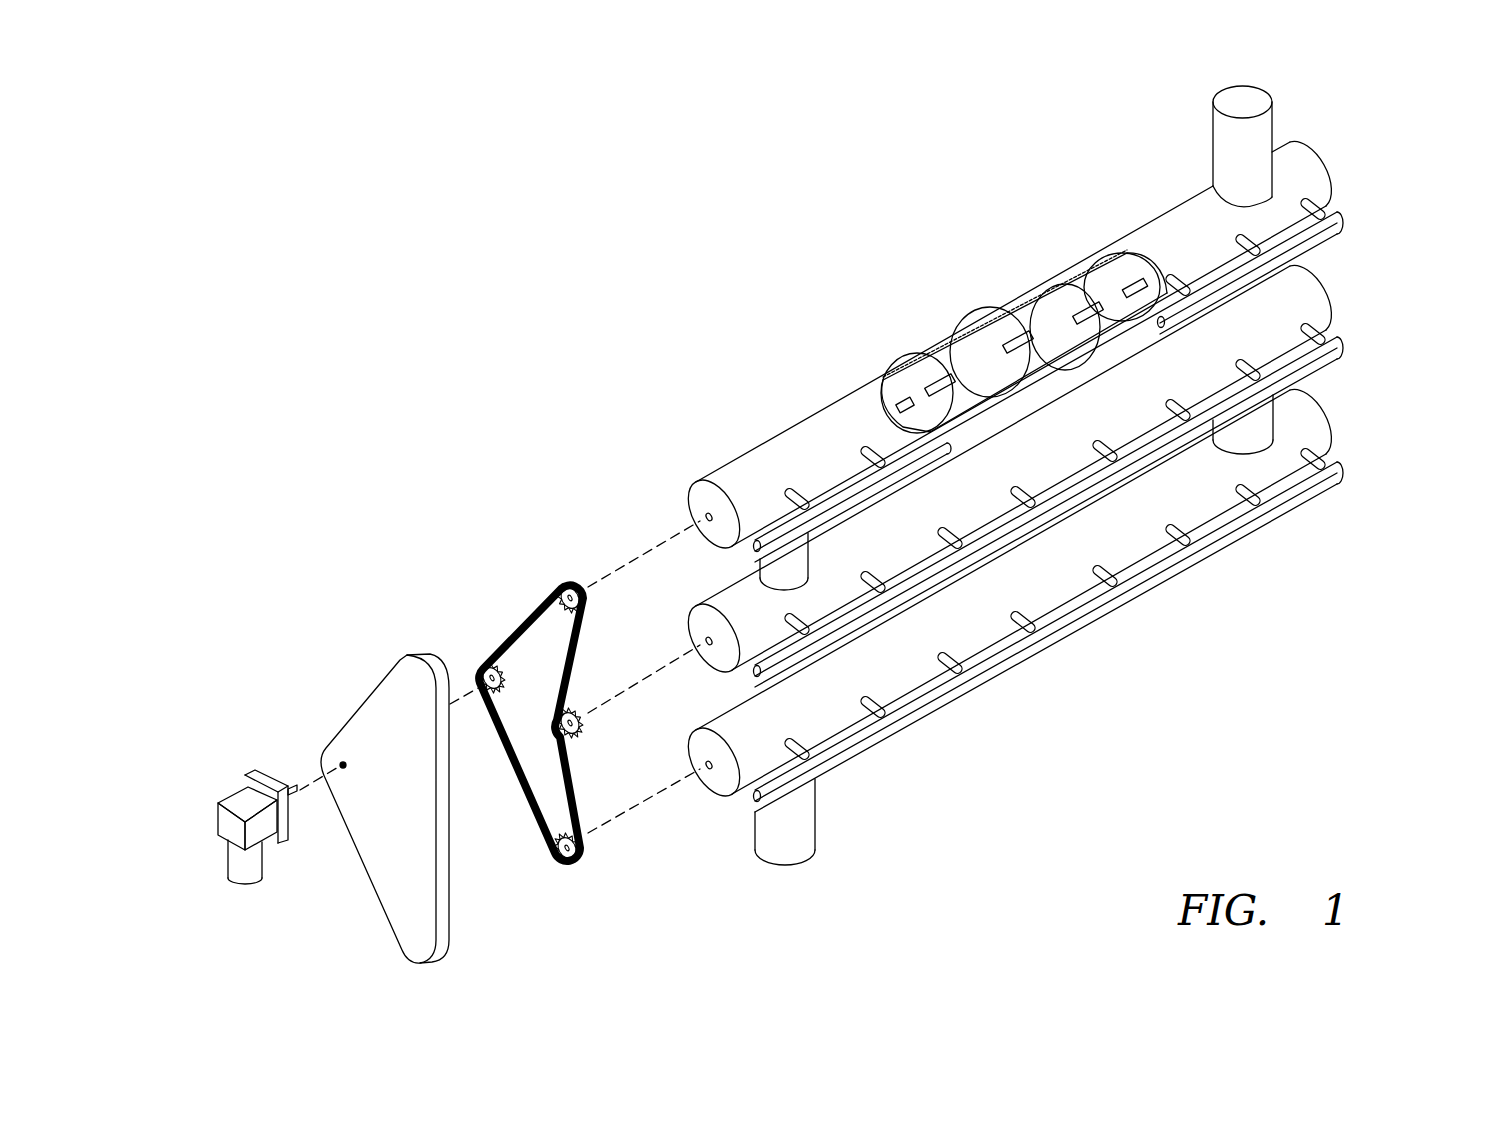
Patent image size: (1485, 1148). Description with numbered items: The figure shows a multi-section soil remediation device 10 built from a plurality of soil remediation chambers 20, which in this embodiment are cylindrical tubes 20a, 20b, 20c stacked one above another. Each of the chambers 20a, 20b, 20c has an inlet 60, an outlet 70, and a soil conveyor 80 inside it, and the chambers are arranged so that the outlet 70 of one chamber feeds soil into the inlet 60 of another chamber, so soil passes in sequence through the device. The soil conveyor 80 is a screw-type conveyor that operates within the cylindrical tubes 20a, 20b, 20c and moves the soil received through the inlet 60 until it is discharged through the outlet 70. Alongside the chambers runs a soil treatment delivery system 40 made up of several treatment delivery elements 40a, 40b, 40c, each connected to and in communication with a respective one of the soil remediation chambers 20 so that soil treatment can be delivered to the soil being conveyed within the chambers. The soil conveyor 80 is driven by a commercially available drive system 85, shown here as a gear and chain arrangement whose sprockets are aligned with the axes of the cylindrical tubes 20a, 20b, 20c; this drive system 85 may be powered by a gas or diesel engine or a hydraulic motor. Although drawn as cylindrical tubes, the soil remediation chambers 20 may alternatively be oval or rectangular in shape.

The multi-section soil remediation device 10 is at (697, 367).
The soil remediation chambers 20 is at (1392, 135).
The cylindrical tube 20a is at (1168, 243).
The cylindrical tube 20b is at (1133, 412).
The cylindrical tube 20c is at (1130, 533).
The soil treatment delivery system 40 is at (735, 542).
The treatment delivery element 40a is at (847, 498).
The treatment delivery element 40b is at (947, 567).
The treatment delivery element 40c is at (1097, 600).
The inlet 60 is at (1240, 100).
The outlet 70 is at (807, 588).
The soil conveyor 80 is at (977, 347).
The drive system 85 is at (560, 520).